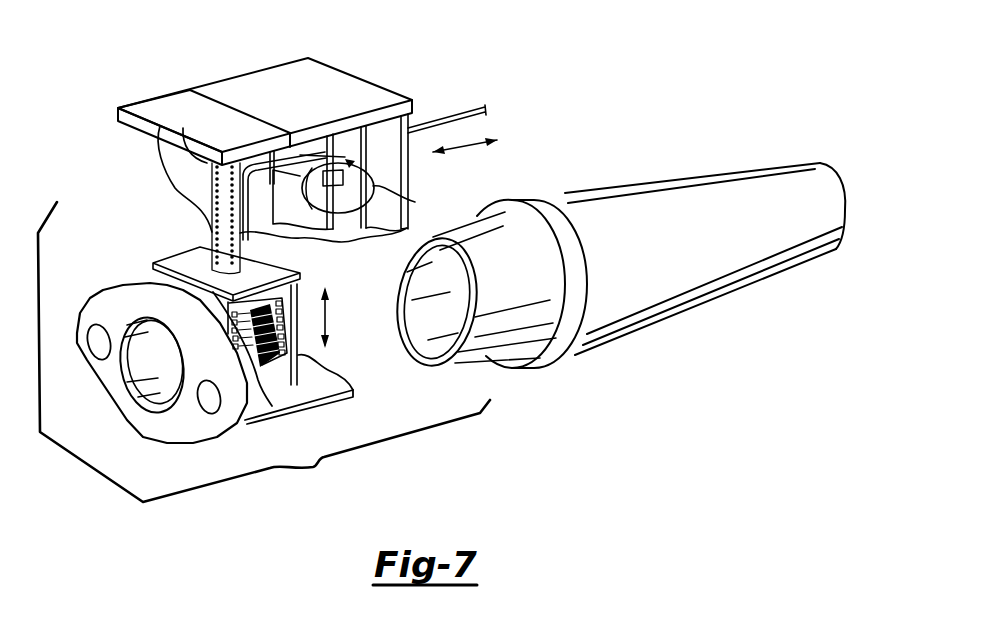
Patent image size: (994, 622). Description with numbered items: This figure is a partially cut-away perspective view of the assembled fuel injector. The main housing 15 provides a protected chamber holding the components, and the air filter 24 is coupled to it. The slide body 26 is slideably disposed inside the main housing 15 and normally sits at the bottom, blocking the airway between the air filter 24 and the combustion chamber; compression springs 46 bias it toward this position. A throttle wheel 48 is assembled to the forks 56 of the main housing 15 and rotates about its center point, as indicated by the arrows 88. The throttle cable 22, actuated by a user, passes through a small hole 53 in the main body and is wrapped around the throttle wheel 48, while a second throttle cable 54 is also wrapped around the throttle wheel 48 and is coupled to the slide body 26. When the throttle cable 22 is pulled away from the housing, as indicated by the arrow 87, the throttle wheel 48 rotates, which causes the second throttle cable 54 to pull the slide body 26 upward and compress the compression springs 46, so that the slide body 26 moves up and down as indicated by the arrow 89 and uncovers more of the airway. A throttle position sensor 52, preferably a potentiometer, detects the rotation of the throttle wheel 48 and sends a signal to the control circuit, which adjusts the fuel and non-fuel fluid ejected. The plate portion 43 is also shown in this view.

The main housing 15 is at (297, 395).
The throttle cable 22 is at (420, 115).
The air filter 24 is at (657, 212).
The slide body 26 is at (287, 358).
The plate section 43 is at (162, 94).
The compression springs 46 is at (213, 181).
The throttle wheel 48 is at (248, 153).
The throttle position sensor 52 is at (268, 88).
The small hole 53 is at (372, 143).
The second throttle cable 54 is at (213, 235).
The forks 56 is at (347, 140).
The arrow 87 is at (465, 146).
The arrows 88 is at (336, 213).
The arrow 89 is at (332, 318).